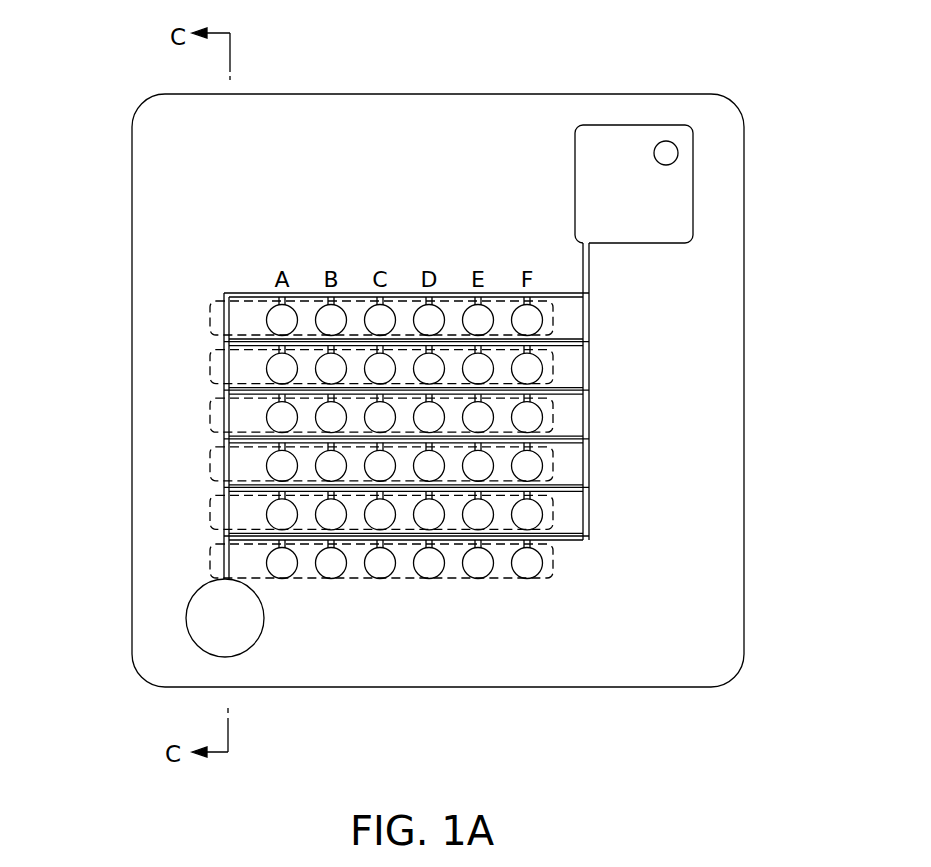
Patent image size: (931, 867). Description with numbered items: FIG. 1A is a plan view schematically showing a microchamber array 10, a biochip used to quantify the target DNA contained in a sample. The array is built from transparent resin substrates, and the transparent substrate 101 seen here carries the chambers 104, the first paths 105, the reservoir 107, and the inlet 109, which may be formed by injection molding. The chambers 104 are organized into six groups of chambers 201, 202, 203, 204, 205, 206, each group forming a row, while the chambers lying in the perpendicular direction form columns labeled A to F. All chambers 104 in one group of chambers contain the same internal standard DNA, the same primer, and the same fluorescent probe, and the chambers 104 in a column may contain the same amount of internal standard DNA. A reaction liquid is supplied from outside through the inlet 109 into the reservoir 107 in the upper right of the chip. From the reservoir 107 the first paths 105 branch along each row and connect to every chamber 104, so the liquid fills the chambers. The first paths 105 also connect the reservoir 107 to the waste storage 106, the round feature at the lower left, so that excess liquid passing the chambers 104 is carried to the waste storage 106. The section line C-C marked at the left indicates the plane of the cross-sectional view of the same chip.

The microchamber array 10 is at (484, 351).
The transparent substrate 101 is at (731, 300).
The chamber 104 is at (477, 570).
The first path 105 is at (530, 298).
The waste storage 106 is at (225, 640).
The reservoir 107 is at (672, 200).
The inlet 109 is at (667, 160).
The group of chambers 201 is at (210, 319).
The group of chambers 202 is at (210, 368).
The group of chambers 203 is at (210, 416).
The group of chambers 204 is at (210, 465).
The group of chambers 205 is at (210, 513).
The group of chambers 206 is at (210, 562).